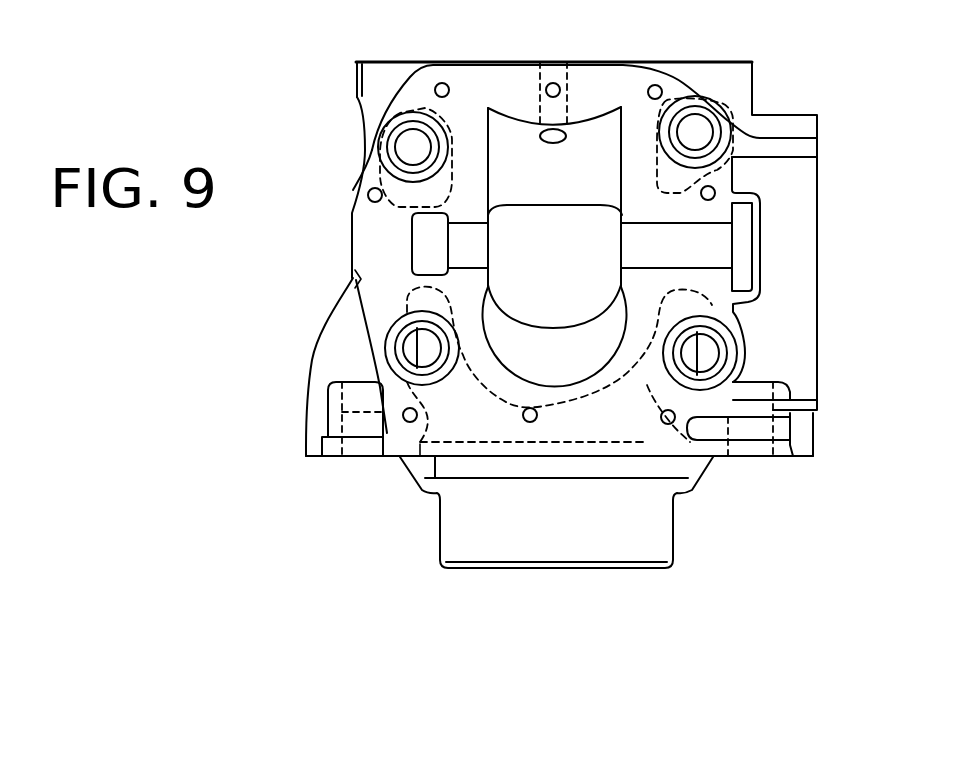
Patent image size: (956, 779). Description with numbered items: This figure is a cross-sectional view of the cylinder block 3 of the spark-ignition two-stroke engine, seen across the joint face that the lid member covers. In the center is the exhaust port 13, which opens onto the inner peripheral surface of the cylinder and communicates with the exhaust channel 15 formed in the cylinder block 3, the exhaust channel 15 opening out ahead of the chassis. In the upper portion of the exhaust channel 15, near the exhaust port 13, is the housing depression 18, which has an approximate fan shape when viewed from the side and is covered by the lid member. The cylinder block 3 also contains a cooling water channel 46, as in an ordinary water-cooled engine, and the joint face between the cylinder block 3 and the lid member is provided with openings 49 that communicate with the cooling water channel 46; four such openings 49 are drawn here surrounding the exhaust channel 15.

The cylinder block 3 is at (343, 113).
The exhaust port 13 is at (568, 278).
The exhaust channel 15 is at (568, 368).
The housing depression 18 is at (568, 185).
The cooling water channel 46 is at (480, 444).
The opening 49 is at (413, 147).